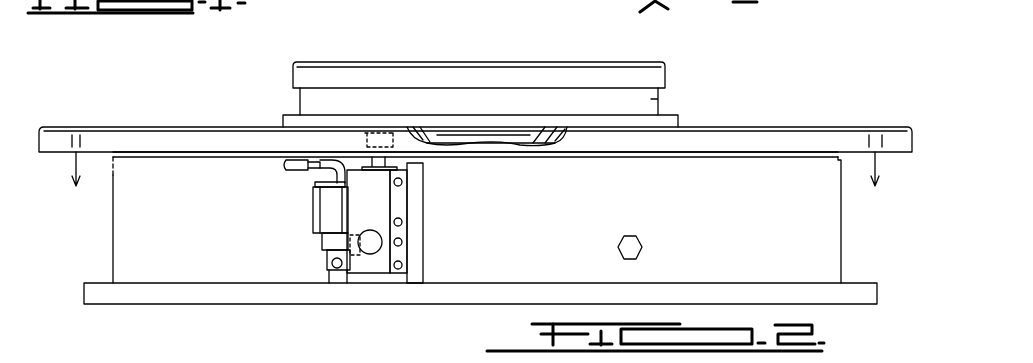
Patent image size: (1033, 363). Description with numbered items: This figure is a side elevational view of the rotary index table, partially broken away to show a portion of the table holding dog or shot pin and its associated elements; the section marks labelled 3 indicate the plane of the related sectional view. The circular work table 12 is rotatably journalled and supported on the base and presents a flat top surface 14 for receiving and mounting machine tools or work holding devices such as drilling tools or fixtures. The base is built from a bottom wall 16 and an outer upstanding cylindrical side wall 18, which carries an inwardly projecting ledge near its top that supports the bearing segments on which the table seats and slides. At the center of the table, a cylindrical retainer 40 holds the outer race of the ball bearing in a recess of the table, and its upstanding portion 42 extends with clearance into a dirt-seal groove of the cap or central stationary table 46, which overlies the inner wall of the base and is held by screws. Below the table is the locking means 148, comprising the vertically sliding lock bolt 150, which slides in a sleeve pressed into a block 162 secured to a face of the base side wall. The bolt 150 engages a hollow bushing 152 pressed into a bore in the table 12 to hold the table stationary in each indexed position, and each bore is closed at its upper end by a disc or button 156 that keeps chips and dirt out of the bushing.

The section line 3- 3 is at (469, 165).
The circular work table 12 is at (830, 137).
The flat top surface 14 is at (780, 128).
The bottom wall 16 is at (483, 298).
The outer upstanding cylindrical shaped side wall 18 is at (123, 242).
The cylindrical retainer 40 is at (672, 116).
The upstanding portion 42 is at (666, 100).
The central stationary table 46 is at (547, 68).
The locking means 148 is at (450, 235).
The lock bolt 150 is at (372, 170).
The hollow bushing 152 is at (440, 160).
The disc or button 156 is at (387, 127).
The block 162 is at (367, 200).